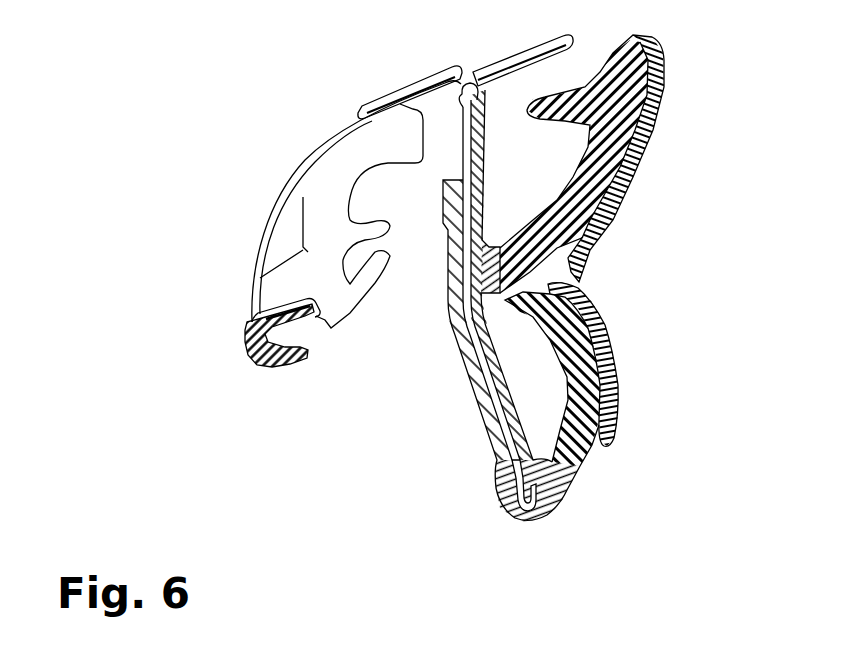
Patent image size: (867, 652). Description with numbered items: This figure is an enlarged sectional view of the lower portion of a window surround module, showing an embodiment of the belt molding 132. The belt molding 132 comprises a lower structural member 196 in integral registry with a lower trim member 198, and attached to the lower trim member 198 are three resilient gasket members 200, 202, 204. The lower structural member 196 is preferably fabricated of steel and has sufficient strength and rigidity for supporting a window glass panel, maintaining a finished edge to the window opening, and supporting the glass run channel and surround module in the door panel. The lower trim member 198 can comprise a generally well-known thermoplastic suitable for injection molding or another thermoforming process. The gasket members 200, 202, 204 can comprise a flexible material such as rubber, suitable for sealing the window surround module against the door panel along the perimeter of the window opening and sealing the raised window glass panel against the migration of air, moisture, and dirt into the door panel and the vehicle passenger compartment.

The belt molding 132 is at (272, 106).
The lower structural member 196 is at (377, 100).
The lower trim member 198 is at (268, 230).
The resilient gasket member 200 is at (610, 172).
The resilient gasket member 202 is at (596, 375).
The resilient gasket member 204 is at (247, 358).